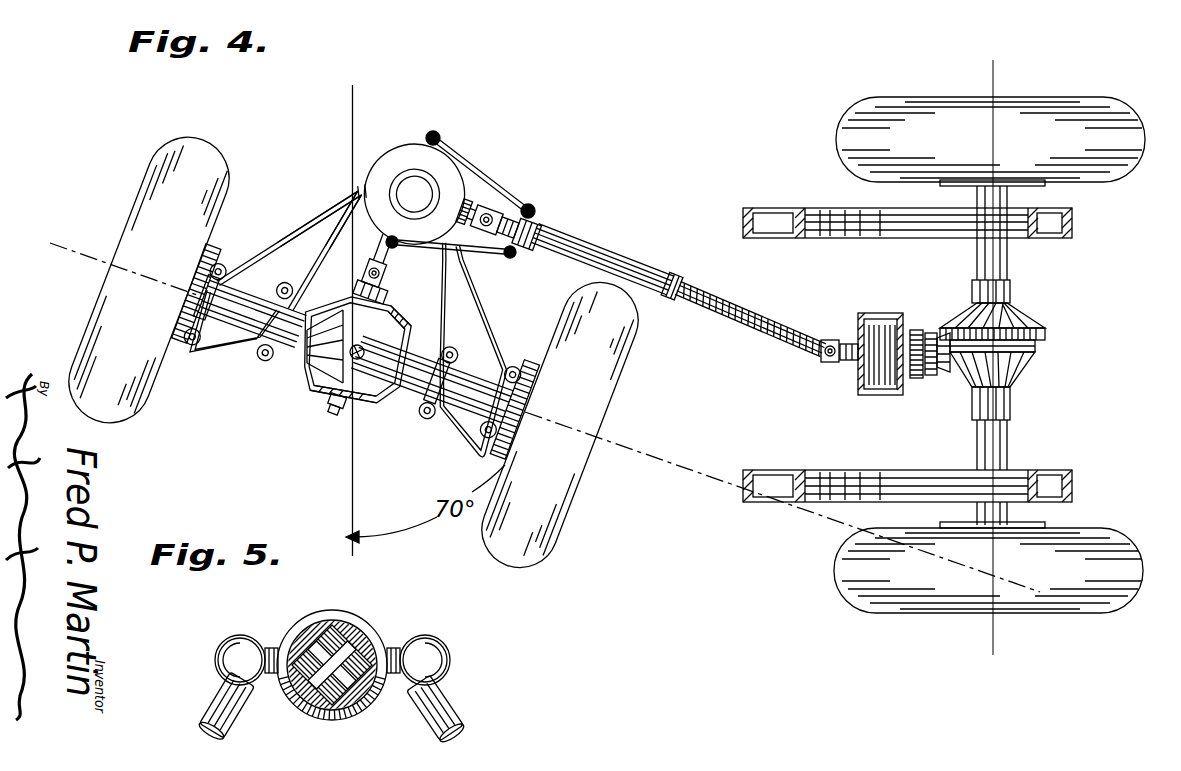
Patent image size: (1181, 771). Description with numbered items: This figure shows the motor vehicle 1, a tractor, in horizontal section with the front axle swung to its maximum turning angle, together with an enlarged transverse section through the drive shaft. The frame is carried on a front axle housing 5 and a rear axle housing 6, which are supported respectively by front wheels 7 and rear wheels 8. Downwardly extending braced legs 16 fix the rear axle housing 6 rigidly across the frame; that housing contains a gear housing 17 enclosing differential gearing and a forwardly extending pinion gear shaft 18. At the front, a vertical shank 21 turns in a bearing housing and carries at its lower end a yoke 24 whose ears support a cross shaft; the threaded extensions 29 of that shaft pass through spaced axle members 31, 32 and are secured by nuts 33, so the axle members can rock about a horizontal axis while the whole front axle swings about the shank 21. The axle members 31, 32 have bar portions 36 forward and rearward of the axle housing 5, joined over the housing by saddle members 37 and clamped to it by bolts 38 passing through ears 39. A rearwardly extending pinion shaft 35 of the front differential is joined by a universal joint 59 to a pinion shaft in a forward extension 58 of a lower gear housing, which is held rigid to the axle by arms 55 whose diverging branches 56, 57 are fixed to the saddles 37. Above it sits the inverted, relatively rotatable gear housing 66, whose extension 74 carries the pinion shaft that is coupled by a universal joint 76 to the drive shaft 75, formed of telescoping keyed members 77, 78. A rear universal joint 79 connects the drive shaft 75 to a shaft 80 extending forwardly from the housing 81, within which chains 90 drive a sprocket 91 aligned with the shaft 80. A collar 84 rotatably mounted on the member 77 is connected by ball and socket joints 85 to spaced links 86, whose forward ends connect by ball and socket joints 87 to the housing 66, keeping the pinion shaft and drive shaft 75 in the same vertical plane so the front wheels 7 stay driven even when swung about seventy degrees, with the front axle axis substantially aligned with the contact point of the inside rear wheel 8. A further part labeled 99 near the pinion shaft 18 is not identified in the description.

In FIG. 4, the motor vehicle 1 is at (1012, 238).
In FIG. 4, the front axle housing 5 is at (467, 403).
In FIG. 4, the rear axle housing 6 is at (1010, 455).
In FIG. 4, the front wheels 7 is at (553, 537).
In FIG. 4, the rear wheels 8 is at (838, 572).
In FIG. 4, the legs 16 is at (1073, 223).
In FIG. 4, the gear housing 17 is at (1025, 368).
In FIG. 4, the pinion gear shaft 18 is at (934, 333).
In FIG. 4, the shank 21 is at (327, 387).
In FIG. 4, the yoke 24 is at (363, 408).
In FIG. 4, the threaded extensions 29 is at (338, 413).
In FIG. 4, the axle member 31 is at (303, 372).
In FIG. 4, the axle member 32 is at (404, 323).
In FIG. 4, the nuts 33 is at (323, 403).
In FIG. 4, the pinion shaft 35 is at (373, 287).
In FIG. 4, the bar portions 36 is at (240, 348).
In FIG. 4, the saddle members 37 is at (207, 290).
In FIG. 4, the bolts 38 is at (185, 318).
In FIG. 4, the ears 39 is at (183, 330).
In FIG. 4, the arms 55 is at (310, 227).
In FIG. 4, the branch 56 is at (311, 290).
In FIG. 4, the branch 57 is at (258, 262).
In FIG. 4, the extension 58 is at (386, 241).
In FIG. 4, the universal joint 59 is at (373, 268).
In FIG. 4, the gear housing 66 is at (405, 160).
In FIG. 4, the extension 74 is at (483, 208).
In FIG. 4, the drive shaft 75 is at (684, 292).
In FIG. 5, the drive shaft 75 is at (366, 630).
In FIG. 4, the universal joint 76 is at (508, 216).
In FIG. 4, the telescoping keyed member 77 is at (612, 258).
In FIG. 5, the telescoping keyed member 77 is at (318, 618).
In FIG. 4, the telescoping keyed member 78 is at (752, 323).
In FIG. 5, the telescoping keyed member 78 is at (380, 643).
In FIG. 4, the universal joint 79 is at (829, 363).
In FIG. 4, the shaft 80 is at (850, 340).
In FIG. 4, the housing 81 is at (878, 316).
In FIG. 4, the collar 84 is at (546, 230).
In FIG. 5, the collar 84 is at (345, 606).
In FIG. 4, the ball and socket joints 85 is at (535, 208).
In FIG. 5, the ball and socket joints 85 is at (449, 654).
In FIG. 4, the links 86 is at (456, 153).
In FIG. 5, the links 86 is at (459, 706).
In FIG. 4, the ball and socket joints 87 is at (435, 131).
In FIG. 4, the chains 90 is at (870, 395).
In FIG. 4, the sprocket 91 is at (888, 395).
In FIG. 4, the gear 99 is at (916, 330).